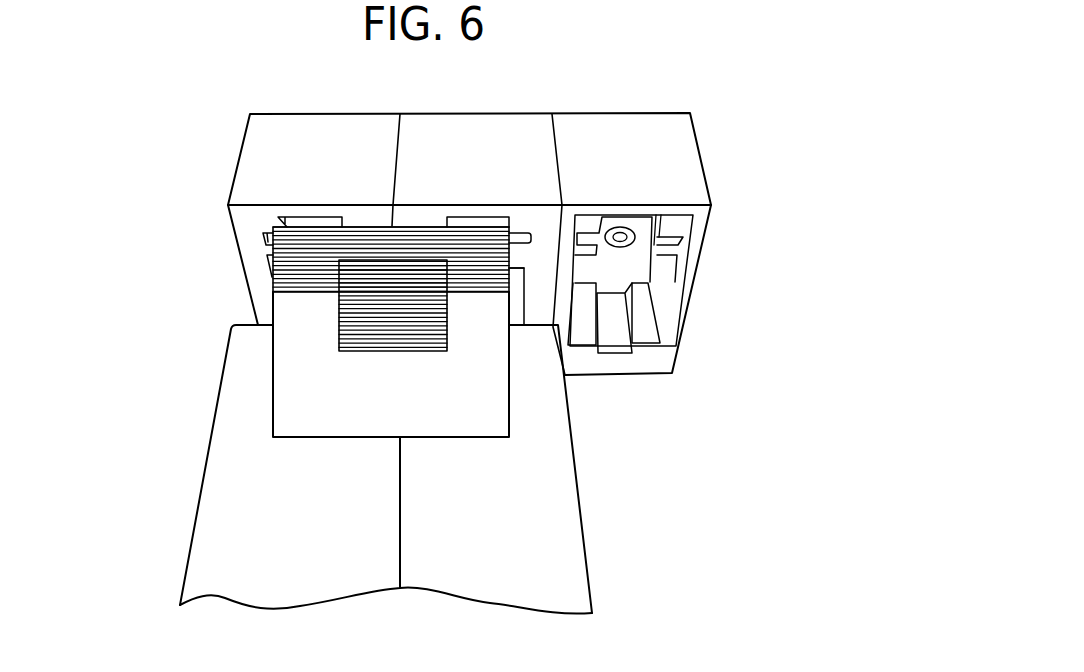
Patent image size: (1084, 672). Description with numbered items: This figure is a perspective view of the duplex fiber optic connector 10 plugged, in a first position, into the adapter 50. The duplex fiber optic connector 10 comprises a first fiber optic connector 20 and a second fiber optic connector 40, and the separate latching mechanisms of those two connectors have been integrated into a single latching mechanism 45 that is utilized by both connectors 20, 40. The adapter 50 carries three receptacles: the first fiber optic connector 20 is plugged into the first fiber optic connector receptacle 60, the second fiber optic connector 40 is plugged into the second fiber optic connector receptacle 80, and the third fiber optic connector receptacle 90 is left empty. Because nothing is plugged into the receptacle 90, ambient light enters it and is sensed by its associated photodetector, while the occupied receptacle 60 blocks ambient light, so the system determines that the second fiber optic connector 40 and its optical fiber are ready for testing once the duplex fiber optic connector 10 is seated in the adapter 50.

The duplex fiber optic connector 10 is at (203, 494).
The first fiber optic connector 20 is at (213, 421).
The second fiber optic connector 40 is at (585, 548).
The single latching mechanism 45 is at (477, 390).
The adapter 50 is at (700, 155).
The first fiber optic connector receptacle 60 is at (263, 240).
The second fiber optic connector receptacle 80 is at (525, 277).
The third fiber optic connector receptacle 90 is at (663, 273).